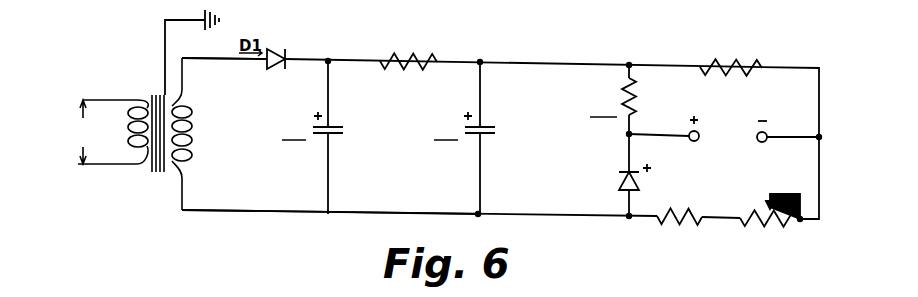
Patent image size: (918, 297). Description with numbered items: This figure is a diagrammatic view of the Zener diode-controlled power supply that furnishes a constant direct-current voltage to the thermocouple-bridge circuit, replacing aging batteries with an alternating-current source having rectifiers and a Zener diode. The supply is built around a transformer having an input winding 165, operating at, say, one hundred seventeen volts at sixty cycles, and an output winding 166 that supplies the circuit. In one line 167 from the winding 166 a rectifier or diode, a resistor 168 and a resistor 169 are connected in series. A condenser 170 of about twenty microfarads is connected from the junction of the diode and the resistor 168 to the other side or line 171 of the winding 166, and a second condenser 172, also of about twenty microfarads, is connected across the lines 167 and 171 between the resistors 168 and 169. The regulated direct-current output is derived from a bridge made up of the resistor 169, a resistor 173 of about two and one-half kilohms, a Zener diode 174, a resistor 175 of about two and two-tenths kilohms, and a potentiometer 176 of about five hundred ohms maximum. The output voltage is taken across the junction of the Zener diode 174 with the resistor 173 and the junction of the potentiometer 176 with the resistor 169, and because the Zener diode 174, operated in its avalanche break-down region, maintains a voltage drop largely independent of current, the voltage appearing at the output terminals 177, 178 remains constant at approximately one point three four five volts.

The input winding 165 is at (138, 106).
The output winding 166 is at (194, 125).
The line 167 is at (238, 61).
The resistor 168 is at (437, 60).
The resistor 169 is at (744, 66).
The condenser 170 is at (338, 127).
The line 171 is at (300, 216).
The condenser 172 is at (485, 127).
The resistor 173 is at (639, 90).
The Zener diode 174 is at (618, 182).
The resistor 175 is at (700, 212).
The potentiometer 176 is at (756, 213).
The output terminal 177 is at (692, 141).
The output terminal 178 is at (761, 142).